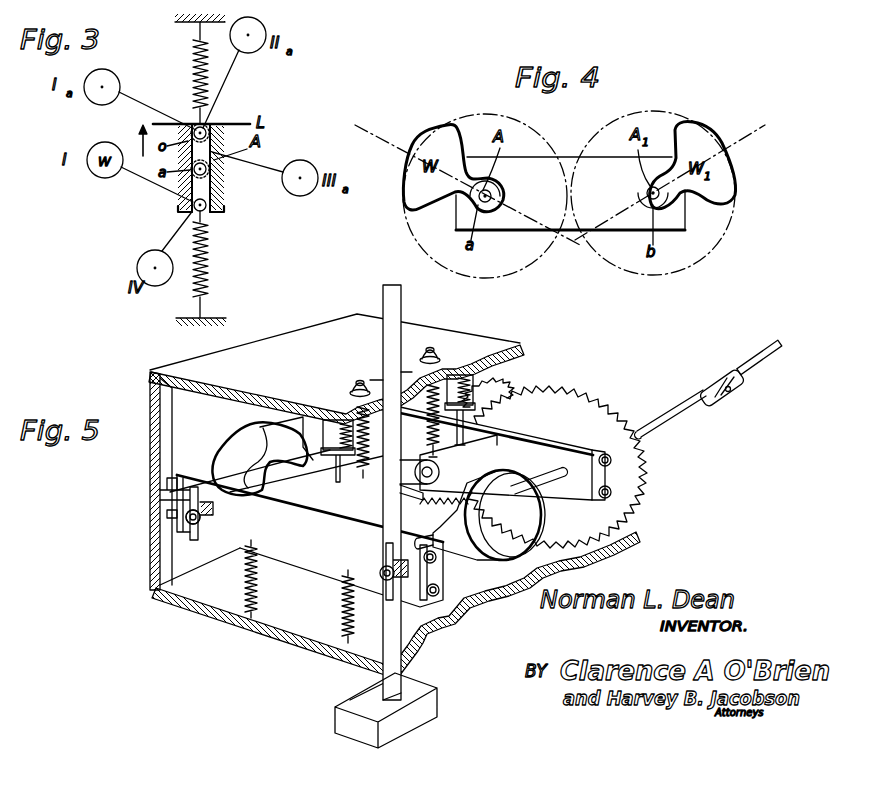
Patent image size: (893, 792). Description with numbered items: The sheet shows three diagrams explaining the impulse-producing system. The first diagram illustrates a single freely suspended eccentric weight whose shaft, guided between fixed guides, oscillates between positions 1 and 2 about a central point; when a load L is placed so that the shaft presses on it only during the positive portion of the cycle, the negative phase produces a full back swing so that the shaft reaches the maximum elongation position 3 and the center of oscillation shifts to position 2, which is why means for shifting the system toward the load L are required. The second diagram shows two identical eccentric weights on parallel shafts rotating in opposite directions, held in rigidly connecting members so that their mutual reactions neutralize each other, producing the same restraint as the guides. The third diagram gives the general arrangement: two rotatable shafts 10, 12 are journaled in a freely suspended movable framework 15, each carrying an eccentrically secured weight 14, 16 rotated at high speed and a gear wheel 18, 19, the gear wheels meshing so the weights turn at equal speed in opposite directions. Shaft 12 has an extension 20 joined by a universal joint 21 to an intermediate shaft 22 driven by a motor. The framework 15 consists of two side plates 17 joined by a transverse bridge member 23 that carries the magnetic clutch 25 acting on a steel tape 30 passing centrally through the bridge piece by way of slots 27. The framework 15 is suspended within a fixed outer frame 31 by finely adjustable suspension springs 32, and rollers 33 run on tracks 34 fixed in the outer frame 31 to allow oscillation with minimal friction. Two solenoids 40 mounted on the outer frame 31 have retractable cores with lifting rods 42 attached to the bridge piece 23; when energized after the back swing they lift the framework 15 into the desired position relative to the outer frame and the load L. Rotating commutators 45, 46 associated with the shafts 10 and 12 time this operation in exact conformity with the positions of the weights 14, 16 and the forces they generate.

In FIG. 3, the oscillation position 1 is at (193, 91).
In FIG. 3, the oscillation position 2 is at (215, 170).
In FIG. 3, the maximum elongation position 3 is at (215, 205).
In FIG. 5, the rotatable shaft 10 is at (394, 534).
In FIG. 5, the rotatable shaft 12 is at (548, 490).
In FIG. 5, the weight 14 is at (488, 538).
In FIG. 4, the framework 15 is at (570, 232).
In FIG. 5, the framework 15 is at (300, 570).
In FIG. 5, the weight 16 is at (240, 452).
In FIG. 5, the side plates 17 is at (336, 560).
In FIG. 4, the gear wheel 18 is at (667, 276).
In FIG. 5, the gear wheel 18 is at (567, 388).
In FIG. 4, the gear wheel 19 is at (530, 270).
In FIG. 5, the gear wheel 19 is at (495, 407).
In FIG. 5, the extension 20 is at (683, 408).
In FIG. 5, the universal joint 21 is at (727, 397).
In FIG. 5, the intermediate shaft 22 is at (766, 364).
In FIG. 5, the transverse bridge member 23 is at (472, 442).
In FIG. 5, the magnetic clutch 25 is at (452, 494).
In FIG. 5, the slots 27 is at (363, 504).
In FIG. 5, the steel tape 30 is at (401, 318).
In FIG. 5, the outer frame 31 is at (300, 633).
In FIG. 5, the suspension springs 32 is at (347, 406).
In FIG. 5, the rollers 33 is at (186, 507).
In FIG. 5, the tracks 34 is at (175, 446).
In FIG. 5, the solenoids 40 is at (475, 390).
In FIG. 5, the lifting rods 42 is at (330, 492).
In FIG. 5, the rotating commutator 45 is at (193, 527).
In FIG. 5, the rotating commutator 46 is at (383, 571).
In FIG. 5, the load L is at (415, 718).